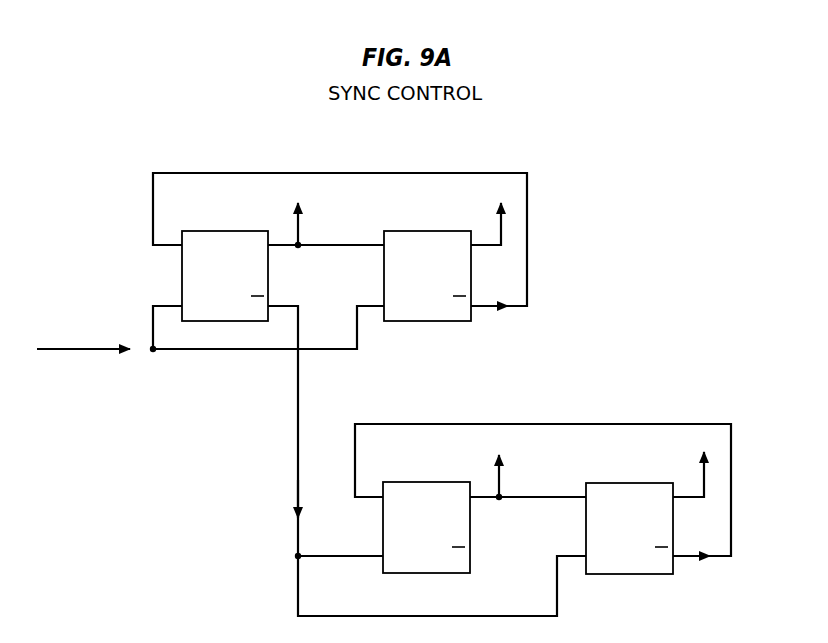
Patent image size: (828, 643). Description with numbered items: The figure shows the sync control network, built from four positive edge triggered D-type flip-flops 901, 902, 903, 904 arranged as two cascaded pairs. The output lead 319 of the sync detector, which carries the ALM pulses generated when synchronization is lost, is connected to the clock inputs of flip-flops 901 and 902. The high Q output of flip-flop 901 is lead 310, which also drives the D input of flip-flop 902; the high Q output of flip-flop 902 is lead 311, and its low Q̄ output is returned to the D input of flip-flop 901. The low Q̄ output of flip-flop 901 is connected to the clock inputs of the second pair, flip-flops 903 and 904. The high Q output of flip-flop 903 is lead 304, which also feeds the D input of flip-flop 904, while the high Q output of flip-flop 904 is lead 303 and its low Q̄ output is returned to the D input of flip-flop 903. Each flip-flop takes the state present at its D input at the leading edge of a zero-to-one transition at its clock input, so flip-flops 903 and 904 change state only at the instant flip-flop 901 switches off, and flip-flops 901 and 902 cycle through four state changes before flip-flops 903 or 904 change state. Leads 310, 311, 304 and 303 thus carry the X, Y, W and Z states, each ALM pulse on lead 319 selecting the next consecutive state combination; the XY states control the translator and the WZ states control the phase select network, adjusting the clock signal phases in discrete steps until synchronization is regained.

The output lead 319 is at (52, 352).
The positive edge triggered D-type flip-flop 901 is at (182, 276).
The positive edge triggered D-type flip-flop 902 is at (384, 275).
The positive edge triggered D-type flip-flop 903 is at (383, 527).
The positive edge triggered D-type flip-flop 904 is at (586, 527).
The lead 310 is at (298, 231).
The lead 311 is at (500, 231).
The lead 304 is at (498, 478).
The lead 303 is at (700, 474).